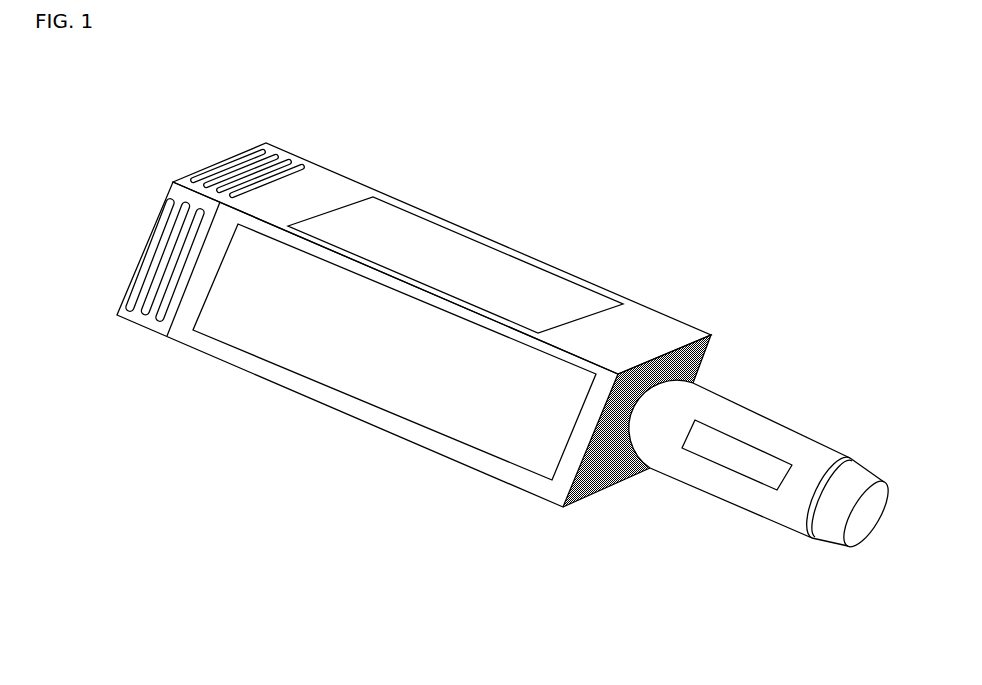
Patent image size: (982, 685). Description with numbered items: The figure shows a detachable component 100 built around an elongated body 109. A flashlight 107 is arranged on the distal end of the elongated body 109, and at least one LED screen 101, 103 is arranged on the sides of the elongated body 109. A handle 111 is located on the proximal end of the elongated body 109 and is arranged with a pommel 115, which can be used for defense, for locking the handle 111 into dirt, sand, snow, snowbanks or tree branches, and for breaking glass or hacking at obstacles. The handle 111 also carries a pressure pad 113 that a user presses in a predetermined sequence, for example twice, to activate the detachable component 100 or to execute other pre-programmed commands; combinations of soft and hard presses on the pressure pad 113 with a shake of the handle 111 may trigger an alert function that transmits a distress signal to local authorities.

The detachable component 100 is at (656, 190).
The LED screen 101 is at (283, 350).
The LED screen 103 is at (473, 262).
The flashlight 107 is at (153, 330).
The elongated body 109 is at (645, 328).
The handle 111 is at (665, 442).
The pressure pad 113 is at (747, 453).
The pommel 115 is at (842, 532).